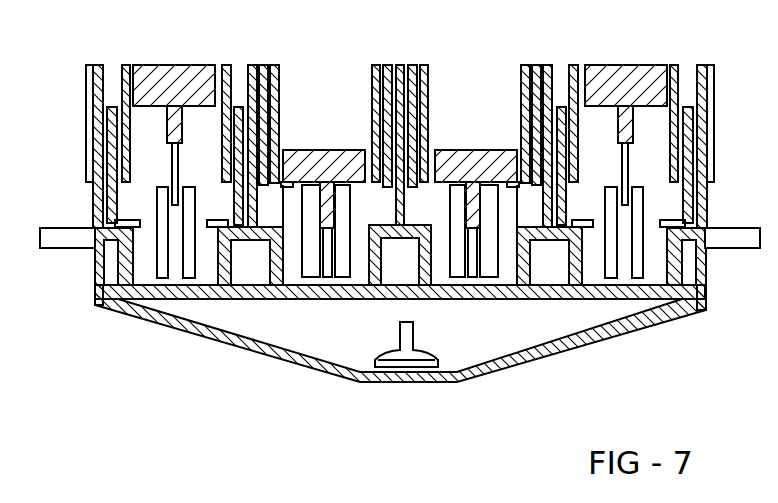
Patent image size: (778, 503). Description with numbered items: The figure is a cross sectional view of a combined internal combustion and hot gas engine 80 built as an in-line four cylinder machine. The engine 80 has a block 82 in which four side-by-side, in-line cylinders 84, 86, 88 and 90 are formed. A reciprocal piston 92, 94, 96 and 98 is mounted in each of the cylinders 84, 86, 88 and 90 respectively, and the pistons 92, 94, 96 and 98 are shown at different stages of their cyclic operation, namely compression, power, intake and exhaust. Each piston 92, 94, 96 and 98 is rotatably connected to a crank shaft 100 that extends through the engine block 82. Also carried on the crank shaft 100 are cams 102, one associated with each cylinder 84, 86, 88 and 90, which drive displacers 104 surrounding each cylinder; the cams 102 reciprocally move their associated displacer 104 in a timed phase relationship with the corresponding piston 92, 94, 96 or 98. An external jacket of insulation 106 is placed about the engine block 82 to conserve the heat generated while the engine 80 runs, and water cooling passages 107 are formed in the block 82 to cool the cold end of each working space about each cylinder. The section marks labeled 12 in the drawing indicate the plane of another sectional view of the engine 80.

The engine 80 is at (213, 350).
The block 82 is at (93, 195).
The cylinder 84 is at (148, 120).
The cylinder 86 is at (298, 105).
The cylinder 88 is at (498, 116).
The cylinder 90 is at (601, 122).
The piston 92 is at (200, 77).
The piston 94 is at (330, 157).
The piston 96 is at (452, 150).
The piston 98 is at (640, 77).
The crank shaft 100 is at (67, 252).
The cams 102 is at (195, 270).
The displacer 104 is at (111, 107).
The jacket of insulation 106 is at (86, 80).
The water cooling passages 107 is at (112, 298).
The section line 12- 12 is at (478, 90).